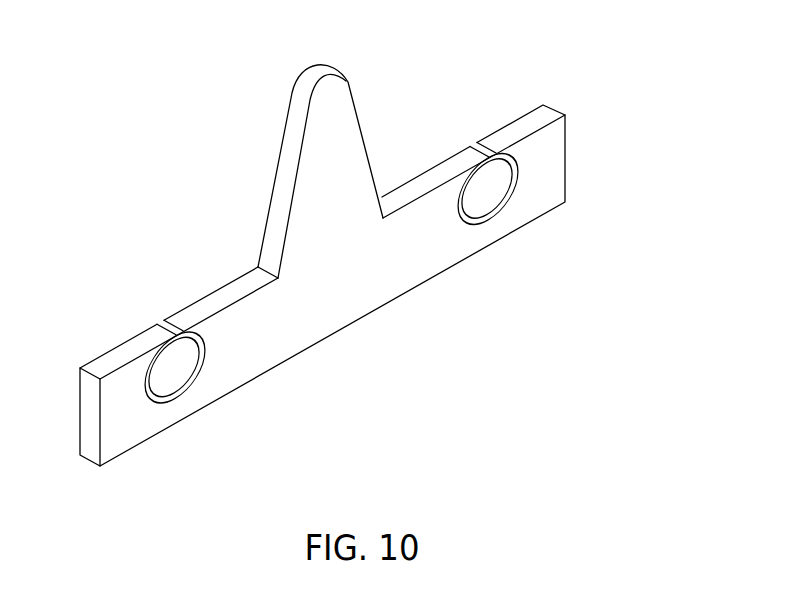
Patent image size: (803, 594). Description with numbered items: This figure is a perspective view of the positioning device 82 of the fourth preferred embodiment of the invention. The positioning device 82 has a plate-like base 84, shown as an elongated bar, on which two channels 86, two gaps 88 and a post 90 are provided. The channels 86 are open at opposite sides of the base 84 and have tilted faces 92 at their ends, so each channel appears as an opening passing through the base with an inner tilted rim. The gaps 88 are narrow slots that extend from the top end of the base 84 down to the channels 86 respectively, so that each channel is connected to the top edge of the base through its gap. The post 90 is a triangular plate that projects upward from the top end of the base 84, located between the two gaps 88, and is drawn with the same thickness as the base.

The positioning device 82 is at (384, 249).
The plate-like base 84 is at (377, 280).
The channels 86 is at (173, 362).
The gaps 88 is at (167, 323).
The post 90 is at (317, 144).
The tilted faces 92 is at (177, 393).